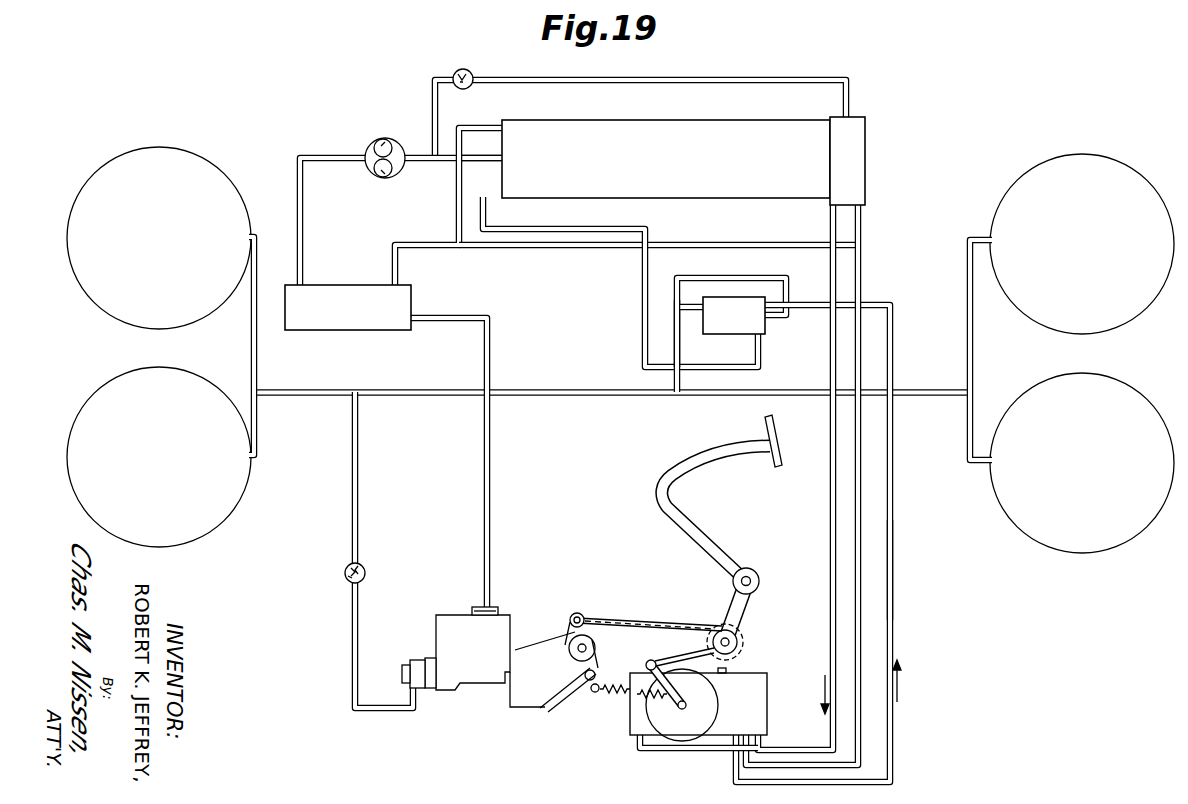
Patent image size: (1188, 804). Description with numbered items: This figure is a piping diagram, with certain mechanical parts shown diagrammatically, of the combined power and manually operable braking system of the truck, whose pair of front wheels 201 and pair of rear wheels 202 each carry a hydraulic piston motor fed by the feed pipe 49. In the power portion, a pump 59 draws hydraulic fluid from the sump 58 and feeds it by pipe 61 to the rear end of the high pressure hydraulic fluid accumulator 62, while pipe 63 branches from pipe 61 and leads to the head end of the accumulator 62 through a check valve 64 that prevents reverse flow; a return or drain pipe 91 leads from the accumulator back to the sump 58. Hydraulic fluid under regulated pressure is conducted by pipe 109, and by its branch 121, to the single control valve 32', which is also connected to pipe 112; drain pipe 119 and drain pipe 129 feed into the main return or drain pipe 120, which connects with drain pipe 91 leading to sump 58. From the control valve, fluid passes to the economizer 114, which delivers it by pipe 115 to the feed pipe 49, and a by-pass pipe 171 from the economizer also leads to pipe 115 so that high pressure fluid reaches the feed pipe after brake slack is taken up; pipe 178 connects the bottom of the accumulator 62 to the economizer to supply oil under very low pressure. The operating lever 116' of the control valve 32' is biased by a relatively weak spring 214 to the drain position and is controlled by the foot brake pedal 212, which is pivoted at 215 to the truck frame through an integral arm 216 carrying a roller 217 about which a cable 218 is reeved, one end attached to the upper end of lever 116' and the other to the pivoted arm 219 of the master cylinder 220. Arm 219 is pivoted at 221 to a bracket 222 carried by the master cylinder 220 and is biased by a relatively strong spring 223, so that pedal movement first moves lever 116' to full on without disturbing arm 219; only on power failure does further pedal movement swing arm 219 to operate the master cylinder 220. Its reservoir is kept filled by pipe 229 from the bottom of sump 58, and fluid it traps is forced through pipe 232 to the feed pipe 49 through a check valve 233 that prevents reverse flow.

The feed pipe 49 is at (604, 397).
The sump 58 is at (358, 293).
The pump 59 is at (368, 147).
The pipe 61 is at (486, 163).
The high pressure hydraulic fluid accumulator 62 is at (758, 148).
The pipe 63 is at (690, 80).
The check valve 64 is at (468, 70).
The return or drain pipe 91 is at (457, 205).
The pipe 109 is at (833, 495).
The pipe 112 is at (893, 566).
The economizer 114 is at (740, 322).
The pipe 115 is at (676, 350).
The operating lever 116' is at (699, 678).
The drain pipe 119 is at (861, 222).
The main return or drain pipe 120 is at (715, 244).
The branch 121 is at (664, 752).
The drain pipe 129 is at (890, 502).
The by-pass pipe 171 is at (760, 278).
The pipe 178 is at (630, 229).
The front wheels 201 is at (118, 365).
The rear wheels 202 is at (1090, 368).
The brake pedal 212 is at (779, 431).
The spring 214 is at (644, 696).
The pivot 215 is at (760, 580).
The integral arm 216 is at (733, 600).
The roller 217 is at (737, 638).
The cable 218 is at (676, 620).
The pivoted arm 219 is at (585, 624).
The master cylinder 220 is at (529, 620).
The pivot 221 is at (596, 648).
The bracket 222 is at (546, 708).
The spring 223 is at (611, 690).
The pipe 229 is at (489, 528).
The pipe 232 is at (358, 508).
The check valve 233 is at (365, 571).
The control valve 32' is at (720, 680).